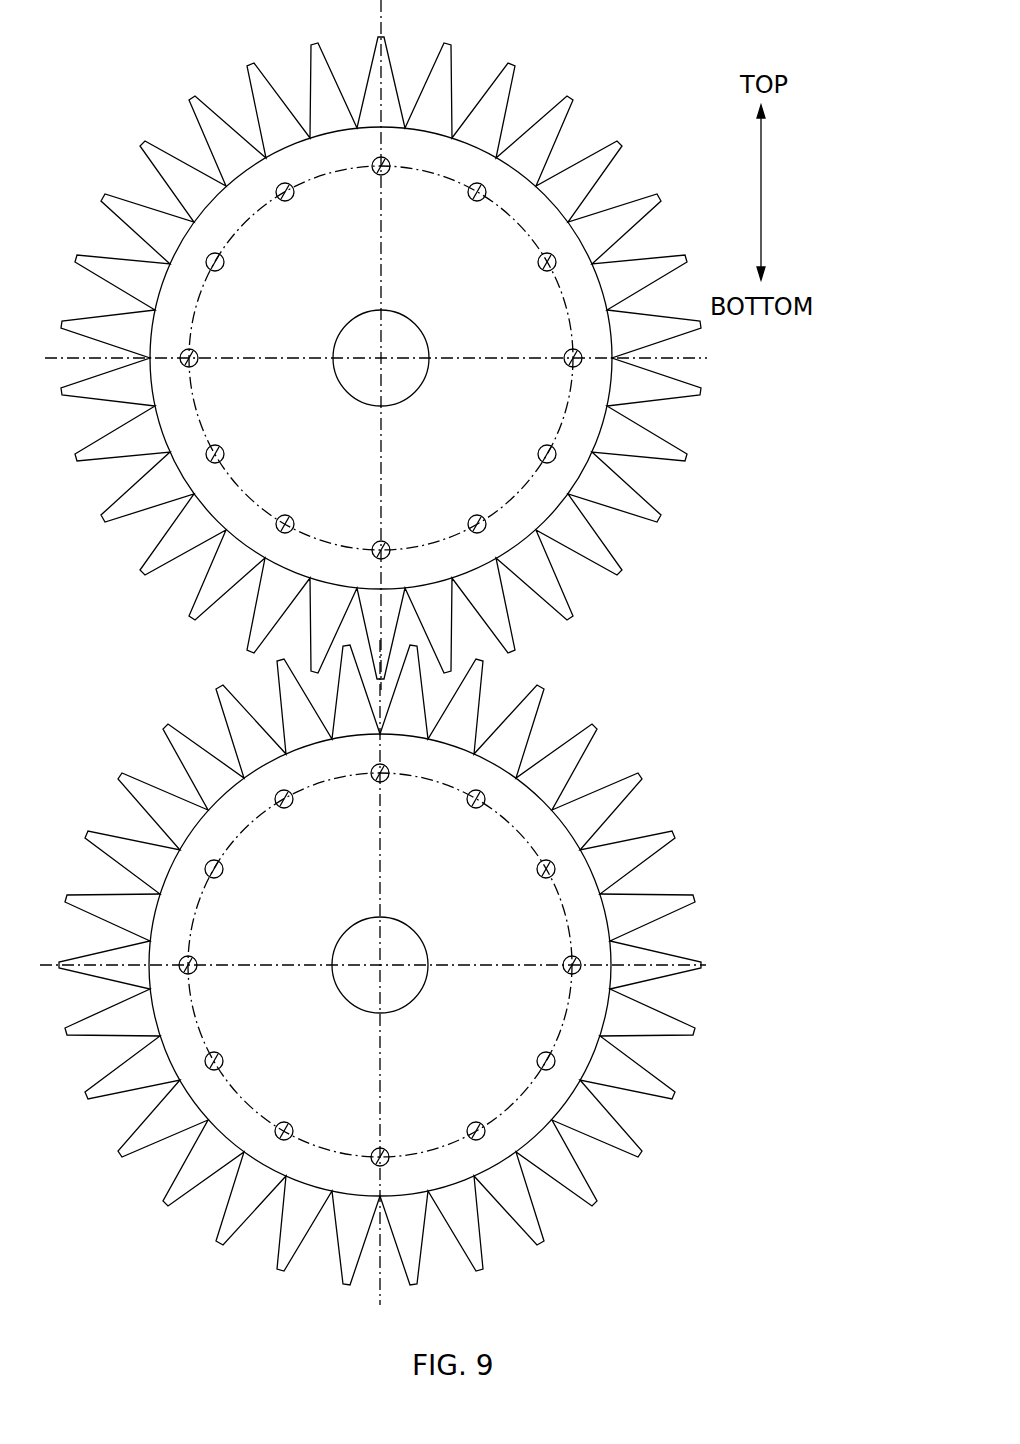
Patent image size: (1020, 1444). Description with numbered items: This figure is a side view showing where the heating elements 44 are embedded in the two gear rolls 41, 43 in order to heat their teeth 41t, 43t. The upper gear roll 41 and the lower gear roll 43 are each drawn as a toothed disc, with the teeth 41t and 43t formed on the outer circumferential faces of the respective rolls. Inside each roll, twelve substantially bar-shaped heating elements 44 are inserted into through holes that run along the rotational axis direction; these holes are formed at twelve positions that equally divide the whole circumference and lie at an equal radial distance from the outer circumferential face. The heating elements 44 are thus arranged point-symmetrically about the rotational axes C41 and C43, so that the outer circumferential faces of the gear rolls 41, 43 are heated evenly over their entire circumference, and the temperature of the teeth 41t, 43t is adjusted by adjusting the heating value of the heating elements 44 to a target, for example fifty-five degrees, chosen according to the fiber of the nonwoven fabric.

The gear roll 41 is at (411, 358).
The teeth of gear roll 41t is at (683, 391).
The gear roll 43 is at (426, 965).
The teeth of gear roll 43t is at (650, 842).
The heating element 44 is at (210, 255).
The rotational axis C41 is at (381, 358).
The rotational axis C43 is at (380, 965).